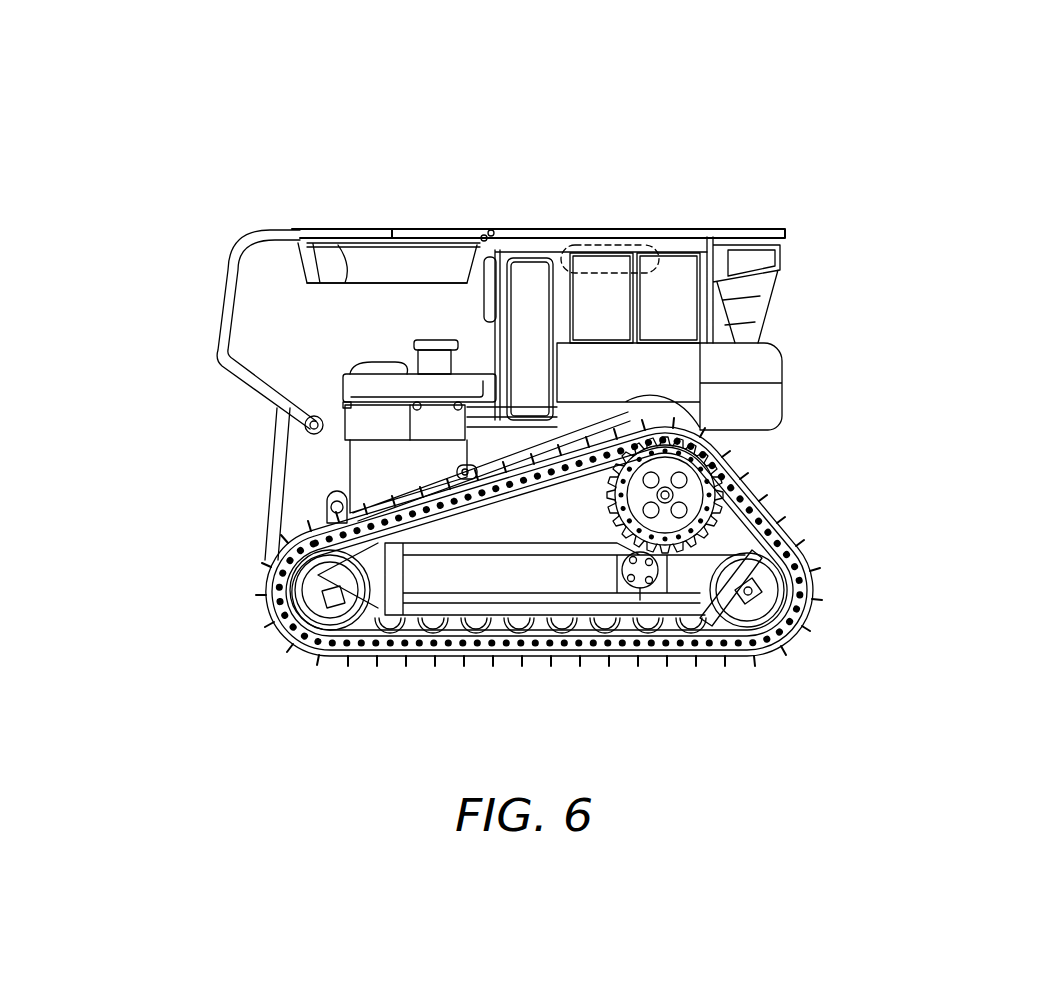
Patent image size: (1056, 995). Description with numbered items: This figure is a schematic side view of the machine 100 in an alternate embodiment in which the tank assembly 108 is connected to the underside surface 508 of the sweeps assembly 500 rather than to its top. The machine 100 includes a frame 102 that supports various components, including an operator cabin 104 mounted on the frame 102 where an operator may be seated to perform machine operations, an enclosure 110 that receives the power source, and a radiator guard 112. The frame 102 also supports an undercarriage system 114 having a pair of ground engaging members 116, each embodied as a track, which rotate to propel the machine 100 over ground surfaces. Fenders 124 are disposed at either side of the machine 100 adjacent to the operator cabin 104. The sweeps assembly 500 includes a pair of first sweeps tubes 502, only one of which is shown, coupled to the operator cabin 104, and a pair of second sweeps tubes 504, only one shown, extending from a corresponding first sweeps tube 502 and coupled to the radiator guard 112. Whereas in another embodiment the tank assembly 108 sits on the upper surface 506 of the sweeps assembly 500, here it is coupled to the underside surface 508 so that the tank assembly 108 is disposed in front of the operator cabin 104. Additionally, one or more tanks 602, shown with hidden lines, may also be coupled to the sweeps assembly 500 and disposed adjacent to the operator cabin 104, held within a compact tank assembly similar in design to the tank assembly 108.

The machine 100 is at (960, 118).
The frame 102 is at (521, 498).
The operator cabin 104 is at (650, 292).
The tank assembly 108 is at (357, 305).
The enclosure 110 is at (367, 477).
The radiator guard 112 is at (267, 473).
The undercarriage system 114 is at (237, 600).
The ground engaging members 116 is at (630, 660).
The fenders 124 is at (605, 375).
The sweeps assembly 500 is at (323, 200).
The first sweeps tube 502 is at (420, 231).
The second sweeps tube 504 is at (235, 292).
The upper surface 506 is at (378, 229).
The underside surface 508 is at (318, 284).
The tanks 602 is at (590, 262).